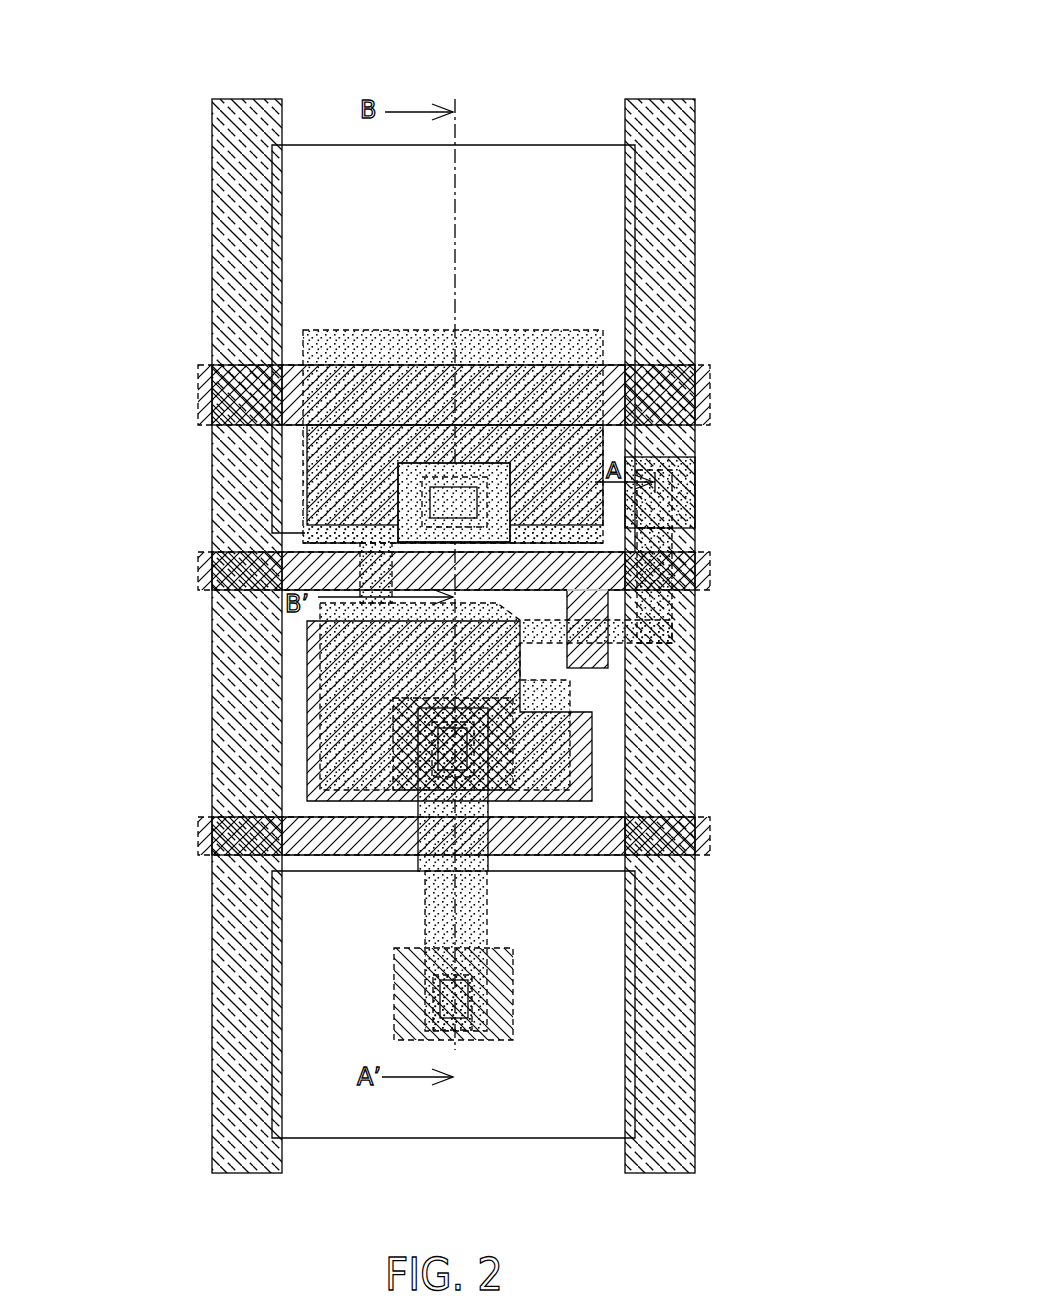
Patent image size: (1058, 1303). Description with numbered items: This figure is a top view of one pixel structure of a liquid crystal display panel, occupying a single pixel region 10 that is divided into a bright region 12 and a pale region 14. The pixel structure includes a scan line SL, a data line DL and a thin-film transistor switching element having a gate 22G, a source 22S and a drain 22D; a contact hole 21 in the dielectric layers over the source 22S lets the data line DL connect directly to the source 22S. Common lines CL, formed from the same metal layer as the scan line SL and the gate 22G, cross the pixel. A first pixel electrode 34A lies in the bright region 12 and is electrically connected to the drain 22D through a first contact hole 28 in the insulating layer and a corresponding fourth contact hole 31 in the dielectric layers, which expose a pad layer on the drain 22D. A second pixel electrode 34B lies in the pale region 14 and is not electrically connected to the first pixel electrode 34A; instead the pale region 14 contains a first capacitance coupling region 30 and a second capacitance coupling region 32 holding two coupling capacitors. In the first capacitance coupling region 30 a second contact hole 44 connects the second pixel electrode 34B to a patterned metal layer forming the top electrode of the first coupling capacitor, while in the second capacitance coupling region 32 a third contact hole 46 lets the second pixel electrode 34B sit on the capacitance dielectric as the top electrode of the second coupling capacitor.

The pixel region 10 is at (683, 64).
The bright region 12 is at (144, 144).
The pale region 14 is at (143, 595).
The contact hole 21 is at (683, 505).
The drain 22D is at (300, 543).
The gate 22G is at (593, 668).
The source 22S is at (705, 518).
The first contact hole 28 is at (481, 478).
The first capacitance coupling region 30 is at (188, 698).
The fourth contact hole 31 is at (487, 500).
The second capacitance coupling region 32 is at (188, 948).
The first pixel electrode 34A is at (396, 330).
The second pixel electrode 34B is at (400, 1122).
The second contact hole 44 is at (470, 752).
The third contact hole 46 is at (468, 995).
The common line CL is at (712, 381).
The scan line SL is at (712, 570).
The data line DL is at (218, 882).